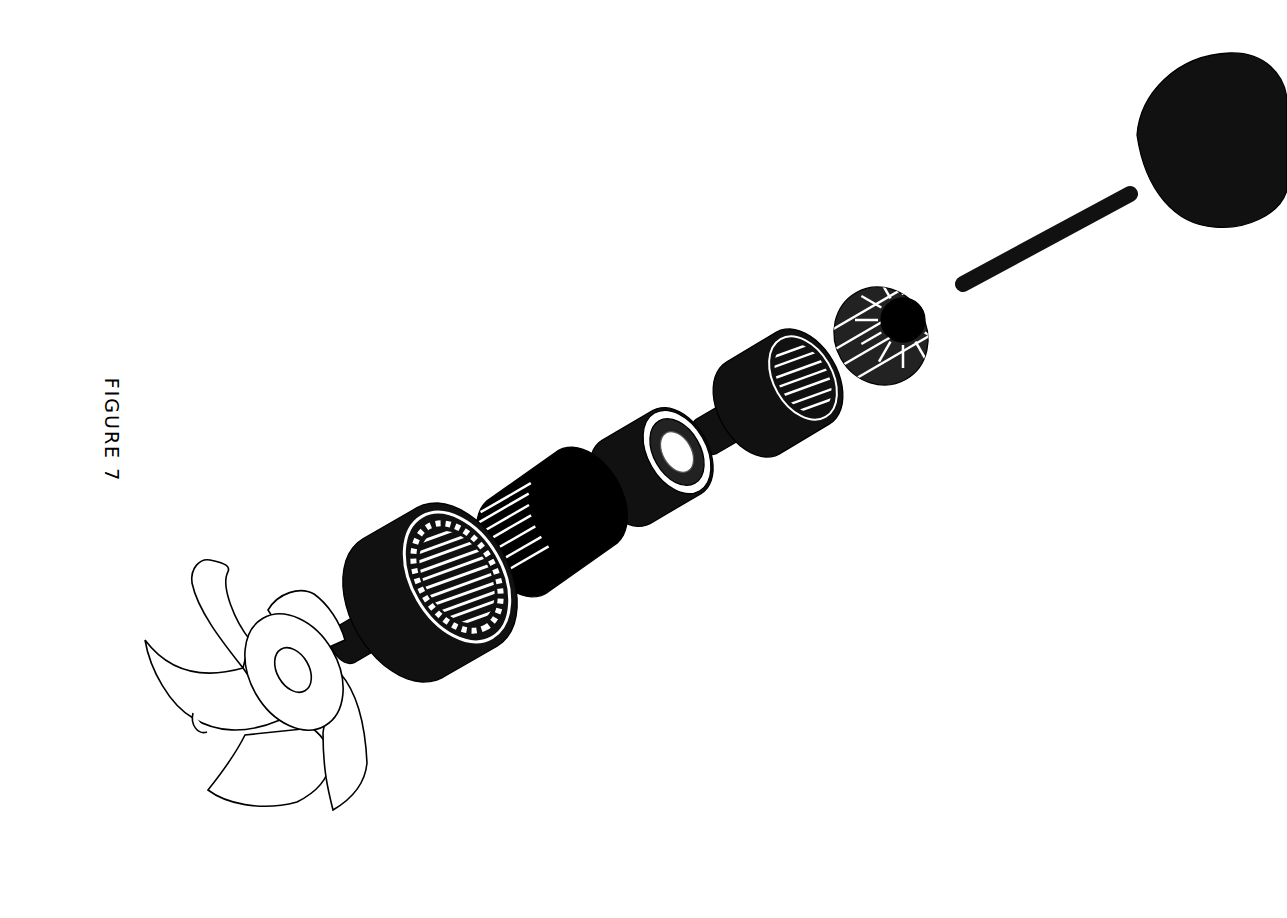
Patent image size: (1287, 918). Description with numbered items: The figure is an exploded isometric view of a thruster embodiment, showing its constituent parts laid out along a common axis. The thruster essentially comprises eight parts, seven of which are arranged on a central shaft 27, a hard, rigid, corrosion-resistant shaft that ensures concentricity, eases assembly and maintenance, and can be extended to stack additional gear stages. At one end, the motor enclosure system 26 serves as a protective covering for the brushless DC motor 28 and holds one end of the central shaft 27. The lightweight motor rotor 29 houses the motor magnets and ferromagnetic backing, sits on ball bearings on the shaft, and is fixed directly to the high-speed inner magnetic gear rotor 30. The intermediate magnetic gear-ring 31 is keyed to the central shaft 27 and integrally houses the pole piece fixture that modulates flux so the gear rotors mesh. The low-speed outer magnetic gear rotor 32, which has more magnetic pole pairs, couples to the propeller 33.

The motor enclosure system 26 is at (1225, 227).
The central shaft 27 is at (1057, 240).
The brushless DC motor 28 is at (790, 290).
The motor rotor 29 is at (798, 447).
The high-speed inner magnetic gear rotor 30 is at (668, 518).
The intermediate magnetic gear-ring 31 is at (512, 476).
The low-speed outer magnetic gear rotor 32 is at (362, 530).
The propeller 33 is at (270, 608).